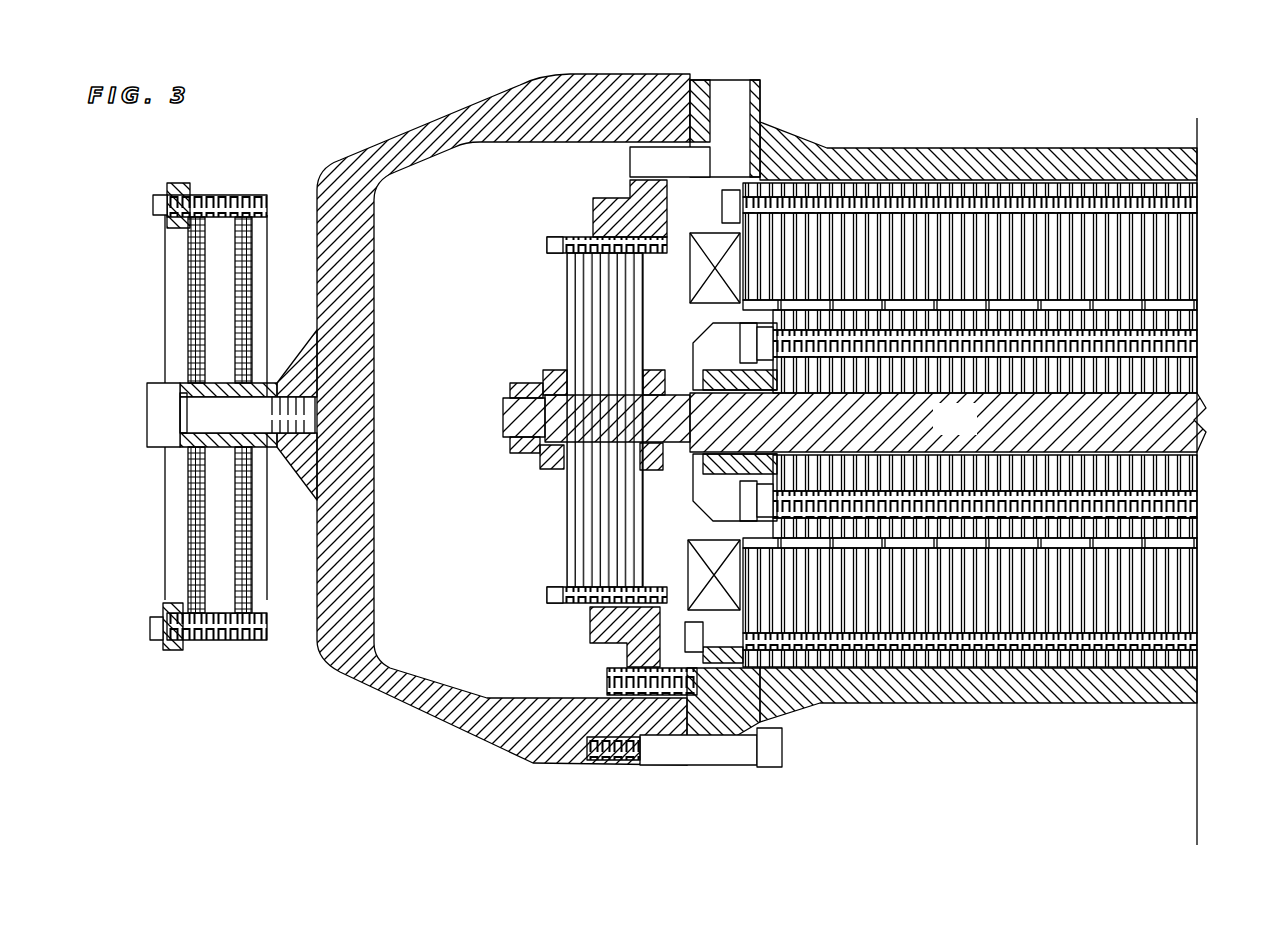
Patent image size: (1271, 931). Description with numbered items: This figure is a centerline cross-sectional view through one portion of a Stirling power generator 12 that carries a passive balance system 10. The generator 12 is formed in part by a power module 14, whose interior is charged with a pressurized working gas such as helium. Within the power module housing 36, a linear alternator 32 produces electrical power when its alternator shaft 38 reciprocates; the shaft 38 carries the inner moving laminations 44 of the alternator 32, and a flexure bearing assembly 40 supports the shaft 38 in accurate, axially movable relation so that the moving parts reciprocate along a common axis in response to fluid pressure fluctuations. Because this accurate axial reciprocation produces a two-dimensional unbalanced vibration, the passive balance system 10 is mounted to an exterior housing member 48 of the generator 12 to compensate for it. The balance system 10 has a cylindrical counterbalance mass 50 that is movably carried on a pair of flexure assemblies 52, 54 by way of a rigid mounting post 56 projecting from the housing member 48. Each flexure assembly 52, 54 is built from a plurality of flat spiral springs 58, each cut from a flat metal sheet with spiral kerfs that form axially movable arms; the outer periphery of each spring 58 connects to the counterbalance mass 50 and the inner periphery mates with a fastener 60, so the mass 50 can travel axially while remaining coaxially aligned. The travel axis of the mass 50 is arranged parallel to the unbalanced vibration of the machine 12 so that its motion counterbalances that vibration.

The passive balance system 10 is at (210, 688).
The power generator 12 is at (1063, 86).
The power module 14 is at (120, 812).
The linear alternator 32 is at (927, 190).
The power module housing 36 is at (967, 703).
The alternator shaft 38 is at (970, 433).
The flexure bearing assembly 40 is at (548, 291).
The inner moving laminations 44 is at (1155, 524).
The exterior housing member 48 is at (392, 700).
The counterbalance mass 50 is at (167, 240).
The flexure assembly 52 is at (180, 500).
The flexure assembly 54 is at (260, 308).
The rigid mounting post 56 is at (297, 458).
The flat spiral spring 58 is at (187, 571).
The fastener 60 is at (145, 405).